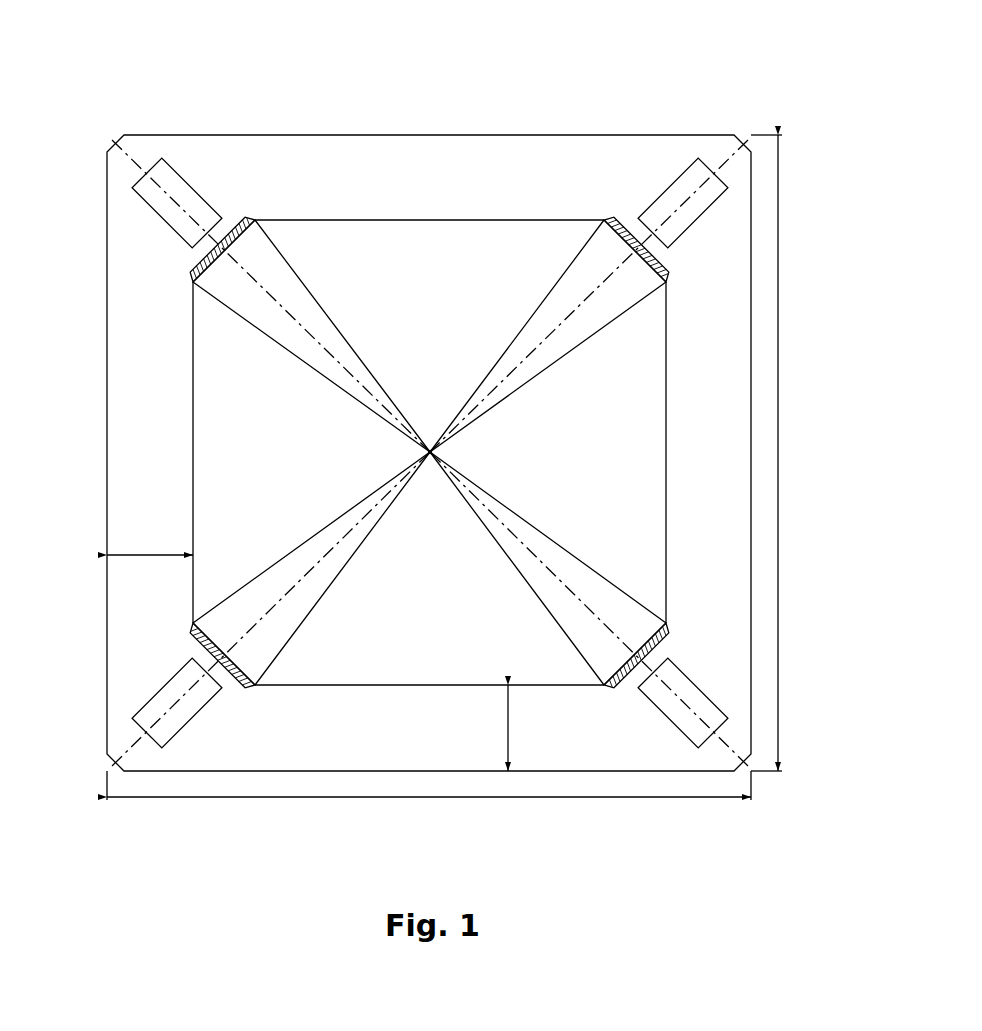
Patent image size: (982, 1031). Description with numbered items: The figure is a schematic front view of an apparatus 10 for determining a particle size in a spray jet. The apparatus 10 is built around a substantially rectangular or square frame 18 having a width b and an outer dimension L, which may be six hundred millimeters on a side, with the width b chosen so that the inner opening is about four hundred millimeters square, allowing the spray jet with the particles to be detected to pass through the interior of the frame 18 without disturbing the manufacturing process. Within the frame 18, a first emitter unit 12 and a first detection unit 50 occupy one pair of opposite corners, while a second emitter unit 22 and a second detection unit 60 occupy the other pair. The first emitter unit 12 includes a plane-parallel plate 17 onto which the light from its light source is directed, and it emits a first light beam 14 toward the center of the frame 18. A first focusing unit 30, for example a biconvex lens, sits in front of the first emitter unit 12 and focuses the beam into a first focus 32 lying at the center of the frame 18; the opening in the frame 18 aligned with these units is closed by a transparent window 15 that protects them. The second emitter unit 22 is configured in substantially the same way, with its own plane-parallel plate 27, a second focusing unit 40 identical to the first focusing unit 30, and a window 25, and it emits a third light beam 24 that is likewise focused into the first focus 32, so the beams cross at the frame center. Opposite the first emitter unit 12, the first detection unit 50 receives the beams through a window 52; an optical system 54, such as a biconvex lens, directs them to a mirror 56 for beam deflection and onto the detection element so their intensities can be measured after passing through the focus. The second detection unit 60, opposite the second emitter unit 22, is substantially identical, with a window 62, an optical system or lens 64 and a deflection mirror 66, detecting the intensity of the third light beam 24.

The apparatus 10 is at (670, 94).
The first emitter unit 12 is at (150, 250).
The first light beam 14 is at (305, 300).
The window 15 is at (256, 221).
The plane-parallel plate 17 is at (178, 192).
The frame 18 is at (107, 438).
The second emitter unit 22 is at (636, 178).
The third light beam 24 is at (557, 355).
The window 25 is at (669, 283).
The plane-parallel plate 27 is at (708, 197).
The first focusing unit 30 is at (221, 256).
The first focus 32 is at (410, 453).
The second focusing unit 40 is at (654, 257).
The first detection unit 50 is at (636, 728).
The window 52 is at (668, 621).
The optical system 54 is at (660, 639).
The mirror 56 is at (701, 700).
The second detection unit 60 is at (133, 684).
The window 62 is at (258, 688).
The optical system or lens 64 is at (243, 689).
The deflection mirror 66 is at (178, 718).